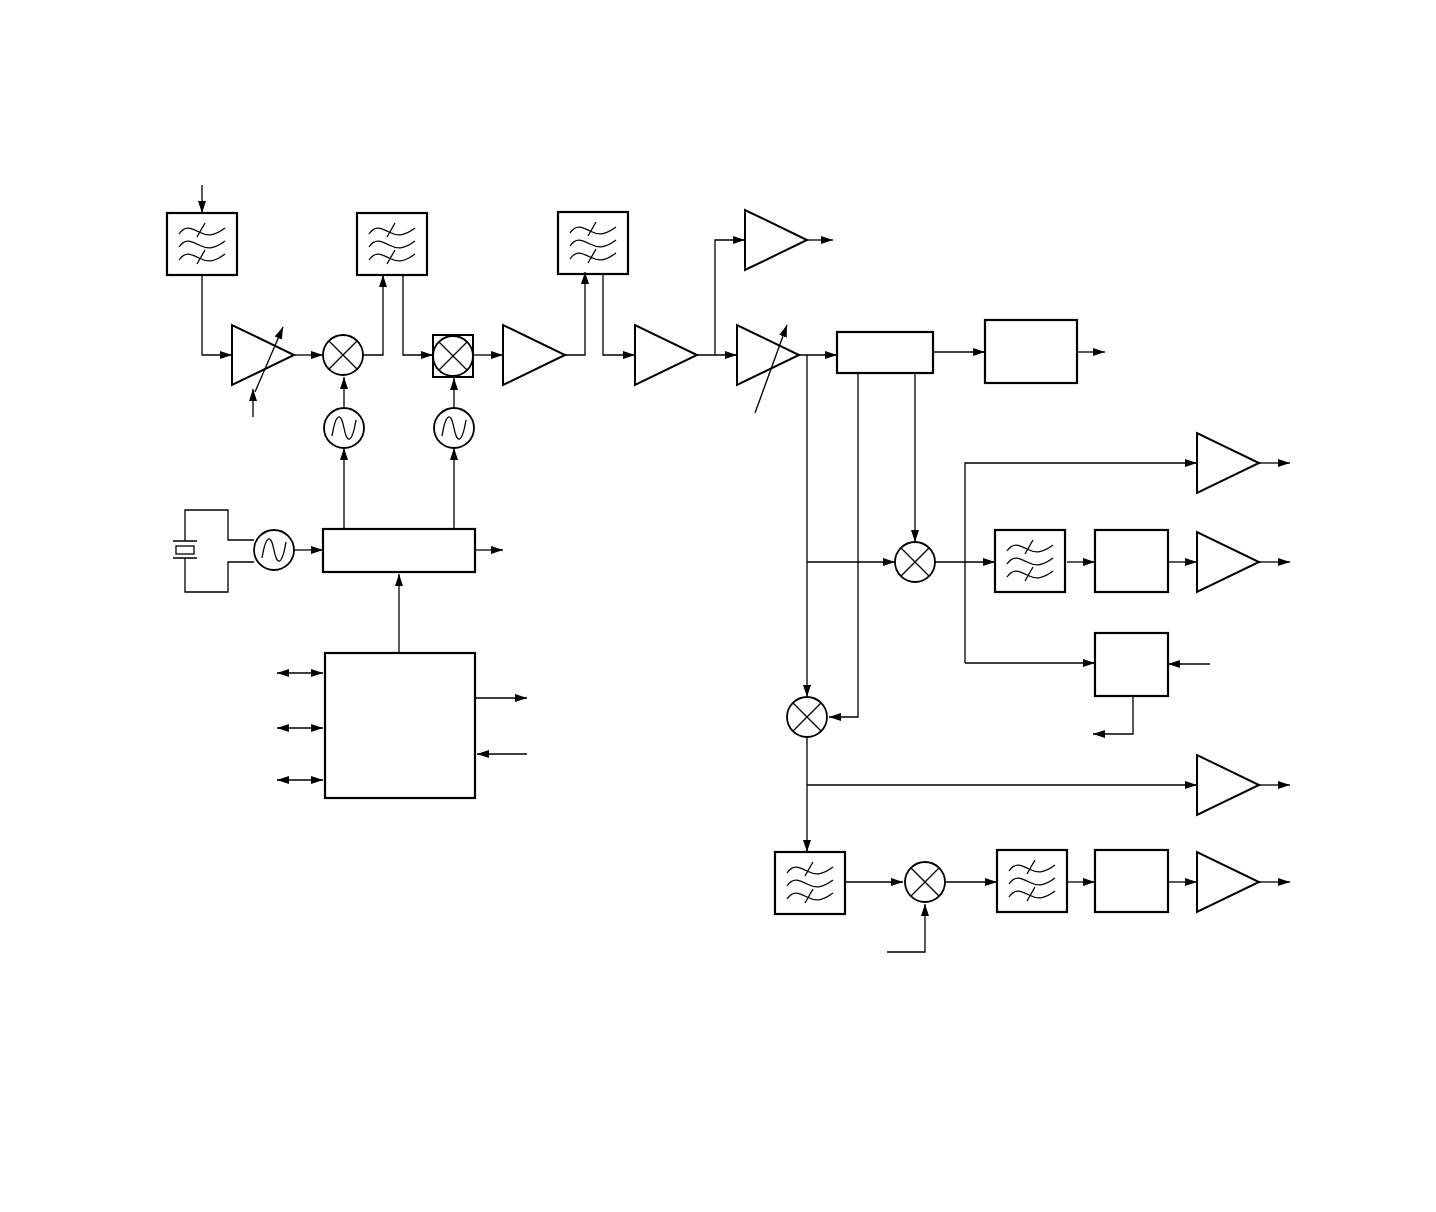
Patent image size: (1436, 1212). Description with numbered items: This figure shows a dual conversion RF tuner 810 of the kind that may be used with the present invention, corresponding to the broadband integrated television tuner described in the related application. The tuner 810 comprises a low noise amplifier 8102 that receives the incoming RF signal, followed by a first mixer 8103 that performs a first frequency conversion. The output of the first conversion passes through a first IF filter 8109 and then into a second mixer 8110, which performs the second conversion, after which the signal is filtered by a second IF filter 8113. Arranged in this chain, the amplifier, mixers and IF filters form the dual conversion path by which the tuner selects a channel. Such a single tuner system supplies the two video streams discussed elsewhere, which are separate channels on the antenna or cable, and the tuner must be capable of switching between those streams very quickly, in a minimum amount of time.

The dual conversion RF tuner 810 is at (540, 901).
The low noise amplifier 8102 is at (230, 377).
The first mixer 8103 is at (341, 335).
The first IF filter 8109 is at (392, 212).
The second mixer 8110 is at (456, 335).
The second IF filter 8113 is at (592, 212).